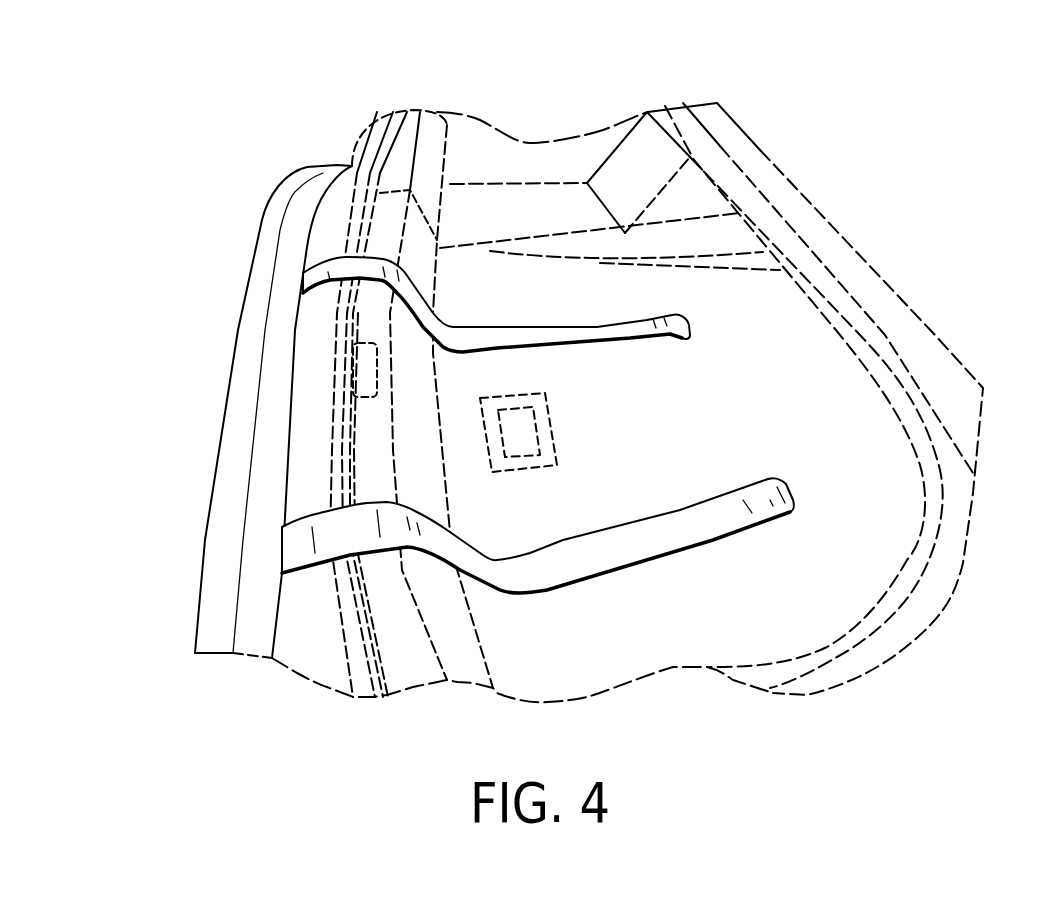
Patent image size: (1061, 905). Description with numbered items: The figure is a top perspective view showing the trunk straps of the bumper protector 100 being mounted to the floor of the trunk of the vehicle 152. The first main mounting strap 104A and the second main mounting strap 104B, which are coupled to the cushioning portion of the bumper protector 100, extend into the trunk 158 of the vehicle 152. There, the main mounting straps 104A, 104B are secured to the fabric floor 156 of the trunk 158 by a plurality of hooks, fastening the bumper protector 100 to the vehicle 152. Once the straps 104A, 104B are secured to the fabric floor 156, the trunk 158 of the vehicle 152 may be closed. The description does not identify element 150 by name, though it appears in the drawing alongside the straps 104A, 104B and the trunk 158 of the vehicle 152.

The bumper protector 100 is at (228, 368).
The first main mounting strap 104A is at (502, 328).
The second main mounting strap 104B is at (534, 572).
The shoulder strap 150 is at (320, 242).
The vehicle 152 is at (367, 122).
The fabric floor 156 is at (737, 403).
The trunk 158 is at (494, 172).